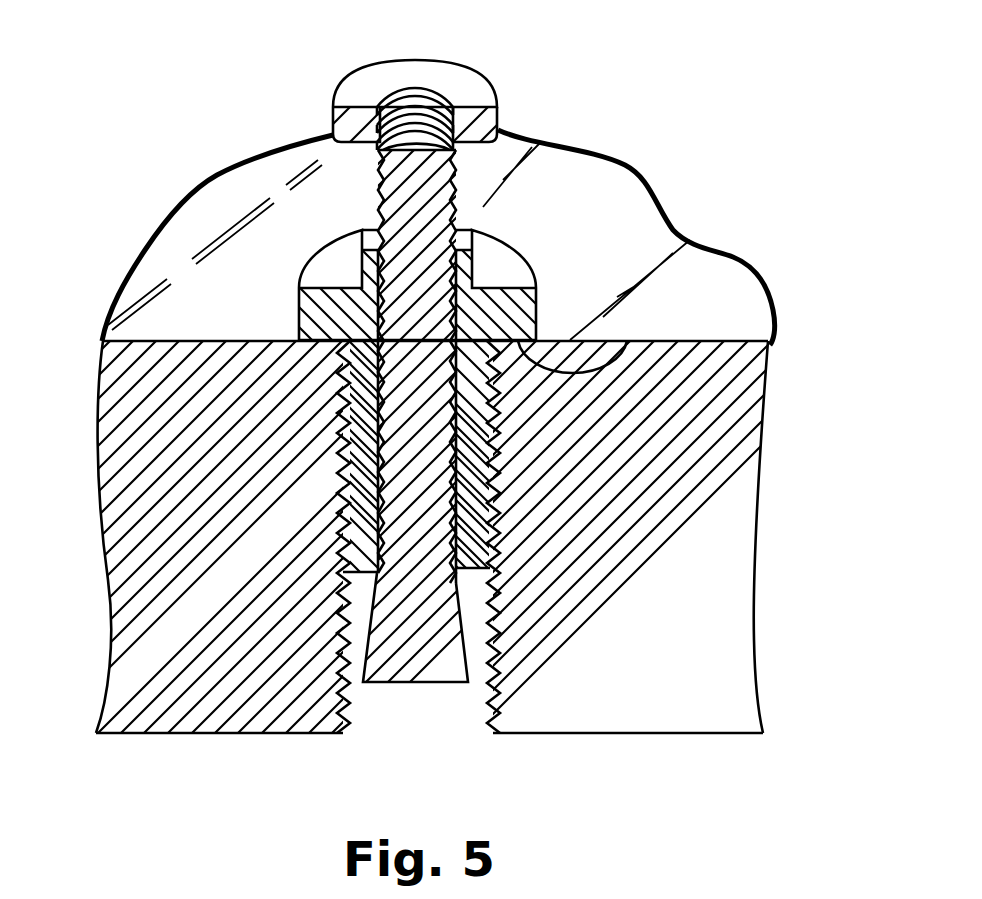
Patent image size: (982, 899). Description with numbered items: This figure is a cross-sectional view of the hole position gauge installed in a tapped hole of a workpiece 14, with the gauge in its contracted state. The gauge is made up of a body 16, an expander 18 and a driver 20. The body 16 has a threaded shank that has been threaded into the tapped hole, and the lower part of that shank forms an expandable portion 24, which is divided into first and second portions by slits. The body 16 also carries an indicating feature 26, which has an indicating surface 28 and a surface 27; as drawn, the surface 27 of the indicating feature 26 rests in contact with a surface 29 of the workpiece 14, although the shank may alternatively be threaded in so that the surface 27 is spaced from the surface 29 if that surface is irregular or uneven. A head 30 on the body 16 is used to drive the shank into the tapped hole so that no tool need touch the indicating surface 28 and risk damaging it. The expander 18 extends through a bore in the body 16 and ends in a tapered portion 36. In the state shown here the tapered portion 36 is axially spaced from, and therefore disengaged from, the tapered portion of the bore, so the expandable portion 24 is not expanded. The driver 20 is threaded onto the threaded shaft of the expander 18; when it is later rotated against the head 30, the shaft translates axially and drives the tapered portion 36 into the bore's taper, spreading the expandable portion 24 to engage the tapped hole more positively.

The workpiece 14 is at (766, 443).
The body 16 is at (484, 506).
The expander 18 is at (456, 575).
The driver 20 is at (478, 68).
The expandable portion 24 is at (470, 432).
The indicating feature 26 is at (342, 266).
The surface 27 is at (632, 345).
The indicating surface 28 is at (297, 310).
The surface 29 is at (173, 307).
The head 30 is at (470, 230).
The tapered portion 36 is at (402, 637).